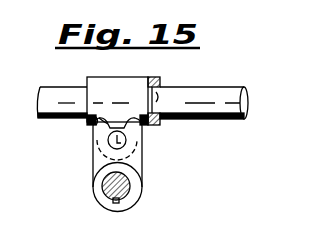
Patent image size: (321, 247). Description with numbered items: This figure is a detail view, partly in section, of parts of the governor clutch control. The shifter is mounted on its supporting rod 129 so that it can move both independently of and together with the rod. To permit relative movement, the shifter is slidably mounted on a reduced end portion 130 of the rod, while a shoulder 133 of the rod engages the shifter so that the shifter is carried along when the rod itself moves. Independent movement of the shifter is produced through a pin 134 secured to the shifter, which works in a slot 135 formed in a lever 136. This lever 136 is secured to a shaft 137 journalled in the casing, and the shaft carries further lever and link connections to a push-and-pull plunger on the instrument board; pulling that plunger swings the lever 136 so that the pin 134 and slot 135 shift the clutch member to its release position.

The supporting rod 129 is at (227, 100).
The reduced end portion 130 is at (57, 100).
The shoulder 133 is at (163, 88).
The pin 134 is at (118, 134).
The slot 135 is at (105, 130).
The lever 136 is at (127, 163).
The shaft 137 is at (117, 185).